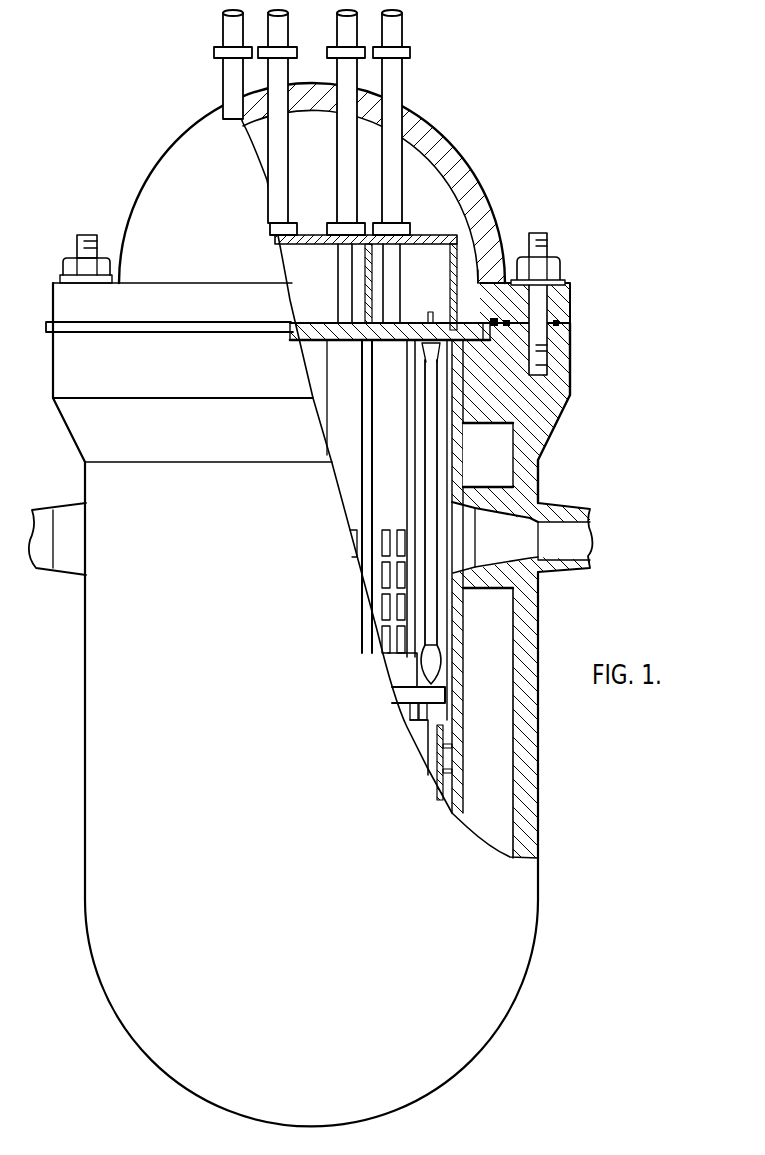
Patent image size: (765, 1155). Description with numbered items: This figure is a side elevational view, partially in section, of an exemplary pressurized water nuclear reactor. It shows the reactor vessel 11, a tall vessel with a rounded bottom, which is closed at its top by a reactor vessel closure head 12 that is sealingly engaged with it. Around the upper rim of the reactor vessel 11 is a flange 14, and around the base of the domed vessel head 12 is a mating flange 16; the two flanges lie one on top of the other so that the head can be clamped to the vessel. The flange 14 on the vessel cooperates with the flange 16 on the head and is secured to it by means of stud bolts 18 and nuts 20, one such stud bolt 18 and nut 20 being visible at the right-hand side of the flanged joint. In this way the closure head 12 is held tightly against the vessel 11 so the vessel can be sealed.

The reactor vessel 11 is at (103, 165).
The reactor vessel closure head 12 is at (455, 162).
The flange 14 is at (562, 368).
The flange 16 is at (566, 302).
The stud bolts 18 is at (546, 235).
The nuts 20 is at (561, 268).